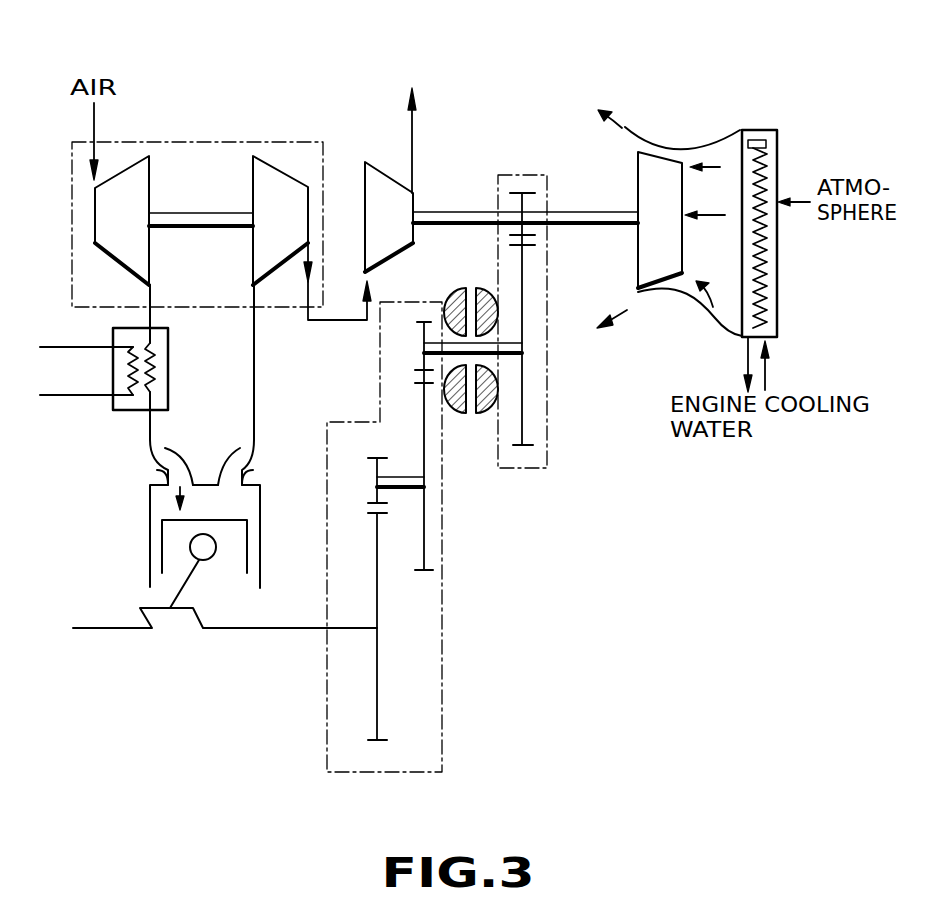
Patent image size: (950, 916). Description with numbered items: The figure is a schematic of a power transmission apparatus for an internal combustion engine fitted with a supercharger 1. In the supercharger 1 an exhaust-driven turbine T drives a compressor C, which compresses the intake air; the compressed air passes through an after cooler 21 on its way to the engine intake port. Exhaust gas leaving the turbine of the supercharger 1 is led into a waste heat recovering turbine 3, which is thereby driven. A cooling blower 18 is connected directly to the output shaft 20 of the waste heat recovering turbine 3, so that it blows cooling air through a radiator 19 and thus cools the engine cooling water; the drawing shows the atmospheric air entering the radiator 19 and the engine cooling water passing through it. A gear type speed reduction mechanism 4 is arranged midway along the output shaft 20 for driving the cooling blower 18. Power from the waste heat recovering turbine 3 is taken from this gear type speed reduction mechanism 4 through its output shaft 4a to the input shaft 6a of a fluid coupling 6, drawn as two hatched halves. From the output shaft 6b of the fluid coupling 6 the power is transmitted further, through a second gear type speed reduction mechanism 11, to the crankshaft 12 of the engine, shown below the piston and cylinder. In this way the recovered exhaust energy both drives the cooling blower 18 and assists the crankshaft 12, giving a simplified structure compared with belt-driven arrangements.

The supercharger 1 is at (202, 144).
The waste heat recovering turbine 3 is at (376, 162).
The gear type speed reduction mechanism 4 is at (510, 175).
The output shaft 4a is at (520, 343).
The fluid coupling 6 is at (491, 406).
The input shaft 6a is at (490, 358).
The output shaft 6b is at (449, 333).
The gear type speed reduction mechanism 11 is at (442, 553).
The crankshaft 12 is at (272, 628).
The cooling blower 18 is at (657, 168).
The radiator 19 is at (763, 130).
The output shaft 20 is at (583, 228).
The after cooler 21 is at (113, 410).